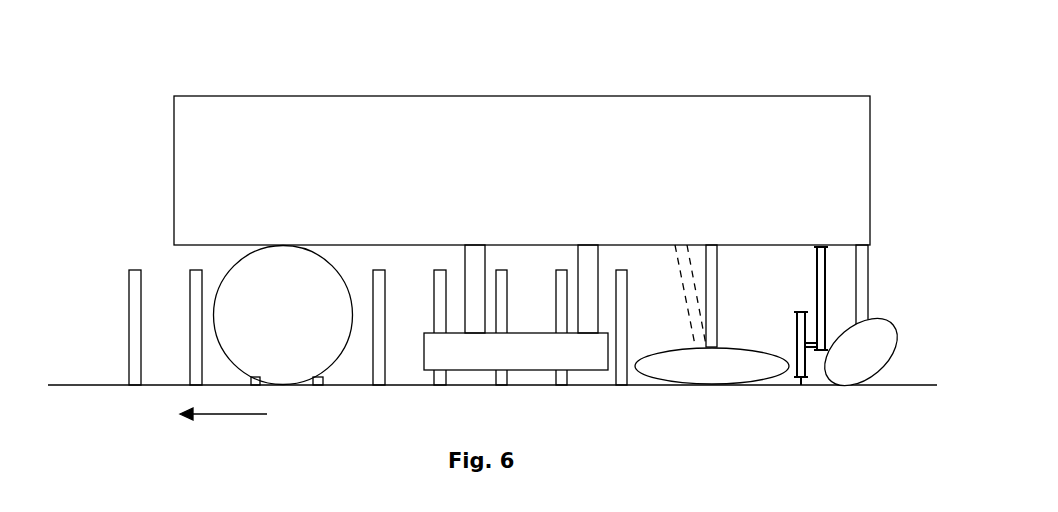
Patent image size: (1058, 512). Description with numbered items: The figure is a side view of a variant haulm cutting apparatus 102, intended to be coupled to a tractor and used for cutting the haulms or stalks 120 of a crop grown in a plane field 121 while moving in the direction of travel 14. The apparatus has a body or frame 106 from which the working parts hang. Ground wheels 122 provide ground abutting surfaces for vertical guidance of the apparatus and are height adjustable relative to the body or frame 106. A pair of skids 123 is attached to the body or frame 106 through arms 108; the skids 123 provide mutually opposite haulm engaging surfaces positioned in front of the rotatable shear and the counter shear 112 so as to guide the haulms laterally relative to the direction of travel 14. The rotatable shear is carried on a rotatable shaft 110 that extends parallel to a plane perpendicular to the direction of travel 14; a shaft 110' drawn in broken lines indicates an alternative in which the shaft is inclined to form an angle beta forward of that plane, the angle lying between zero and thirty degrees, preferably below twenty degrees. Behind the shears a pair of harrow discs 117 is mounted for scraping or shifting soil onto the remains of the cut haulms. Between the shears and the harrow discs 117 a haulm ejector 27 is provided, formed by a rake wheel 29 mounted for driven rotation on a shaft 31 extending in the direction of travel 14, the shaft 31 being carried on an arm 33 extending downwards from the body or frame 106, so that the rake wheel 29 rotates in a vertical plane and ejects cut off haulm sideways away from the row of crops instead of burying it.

The haulm cutting apparatus 102 is at (687, 76).
The body or frame 106 is at (498, 96).
The arms 108 is at (470, 260).
The rotatable shaft 110 is at (740, 296).
The shaft 110' is at (669, 298).
The counter shear 112 is at (750, 373).
The harrow discs 117 is at (852, 373).
The haulms or stalks 120 is at (497, 377).
The plane field 121 is at (63, 385).
The ground wheels 122 is at (303, 328).
The skids 123 is at (520, 362).
The direction of travel 14 is at (217, 414).
The haulm ejector 27 is at (822, 390).
The rake wheel 29 is at (800, 373).
The shaft 31 is at (807, 338).
The arm 33 is at (823, 277).